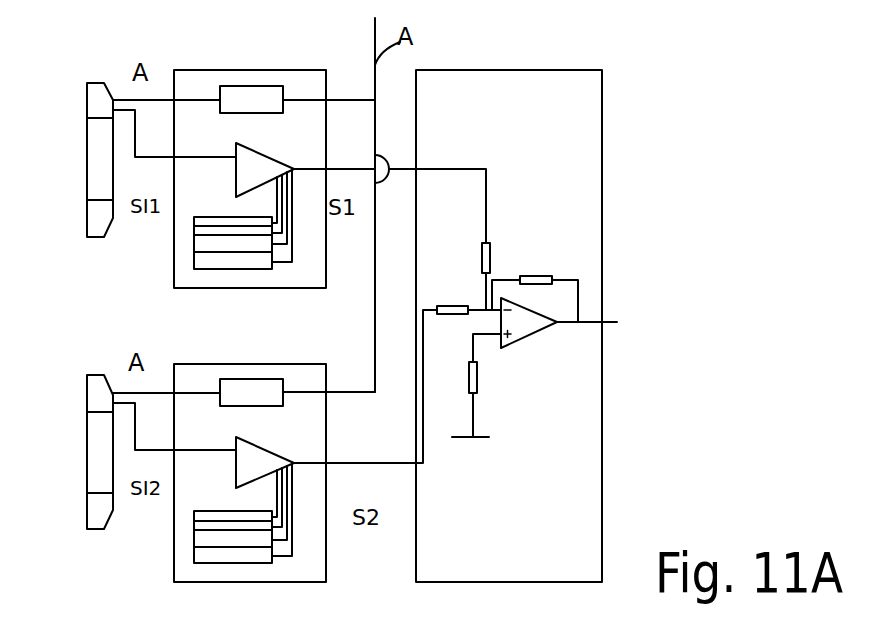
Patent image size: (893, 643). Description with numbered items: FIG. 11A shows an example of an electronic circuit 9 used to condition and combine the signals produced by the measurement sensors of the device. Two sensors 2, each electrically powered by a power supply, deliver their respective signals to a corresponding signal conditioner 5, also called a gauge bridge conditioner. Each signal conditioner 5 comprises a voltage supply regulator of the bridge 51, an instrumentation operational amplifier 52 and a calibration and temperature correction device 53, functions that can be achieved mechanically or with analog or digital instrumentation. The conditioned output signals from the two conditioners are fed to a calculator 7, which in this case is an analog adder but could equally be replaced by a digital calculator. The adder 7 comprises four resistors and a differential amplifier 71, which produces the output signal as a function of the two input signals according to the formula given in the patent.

The sensor 2 is at (96, 165).
The signal conditioner 5 is at (168, 273).
The voltage supply regulator of the bridge 51 is at (247, 98).
The instrumentation operational amplifier 52 is at (268, 162).
The calibration and temperature correction device 53 is at (243, 260).
The electronic circuit 9 is at (635, 190).
The calculator 7 is at (551, 330).
The differential amplifier 71 is at (522, 318).